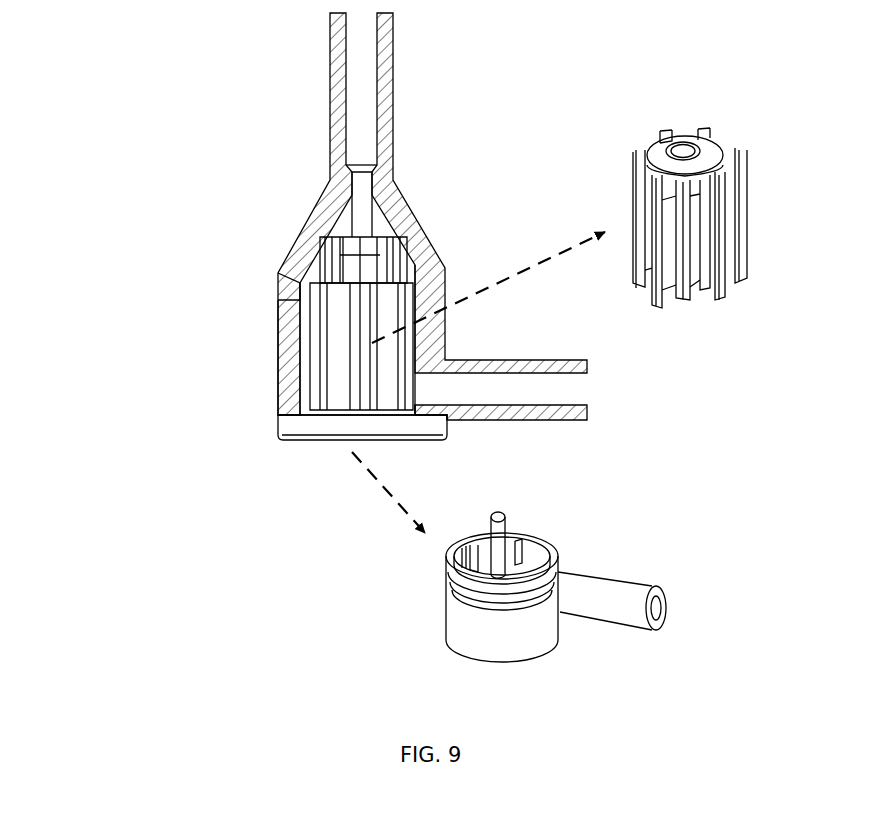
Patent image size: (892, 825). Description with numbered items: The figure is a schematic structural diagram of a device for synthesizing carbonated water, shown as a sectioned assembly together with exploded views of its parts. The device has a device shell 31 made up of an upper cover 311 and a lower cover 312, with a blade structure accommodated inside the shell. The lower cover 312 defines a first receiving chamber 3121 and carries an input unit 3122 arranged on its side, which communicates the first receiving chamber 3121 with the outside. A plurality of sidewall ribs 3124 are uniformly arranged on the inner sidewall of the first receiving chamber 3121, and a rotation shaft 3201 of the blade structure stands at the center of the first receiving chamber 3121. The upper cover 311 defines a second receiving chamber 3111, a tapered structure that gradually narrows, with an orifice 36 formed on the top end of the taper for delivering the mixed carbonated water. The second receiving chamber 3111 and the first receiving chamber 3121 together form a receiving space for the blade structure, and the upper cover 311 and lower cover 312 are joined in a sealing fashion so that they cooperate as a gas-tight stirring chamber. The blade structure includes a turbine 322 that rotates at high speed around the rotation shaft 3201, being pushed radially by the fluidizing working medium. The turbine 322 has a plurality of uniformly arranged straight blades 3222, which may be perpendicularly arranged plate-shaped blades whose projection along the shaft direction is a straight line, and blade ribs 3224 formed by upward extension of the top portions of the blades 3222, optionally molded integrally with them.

The device shell 31 is at (152, 262).
The upper cover 311 is at (290, 297).
The lower cover 312 is at (283, 385).
The orifice 36 is at (360, 185).
The second receiving chamber 3111 is at (378, 225).
The turbine 322 is at (670, 214).
The straight blades 3222 is at (650, 228).
The blade ribs 3224 is at (703, 195).
The first receiving chamber 3121 is at (531, 553).
The sidewall ribs 3124 is at (482, 547).
The rotation shaft 3201 is at (499, 535).
The input unit 3122 is at (582, 585).